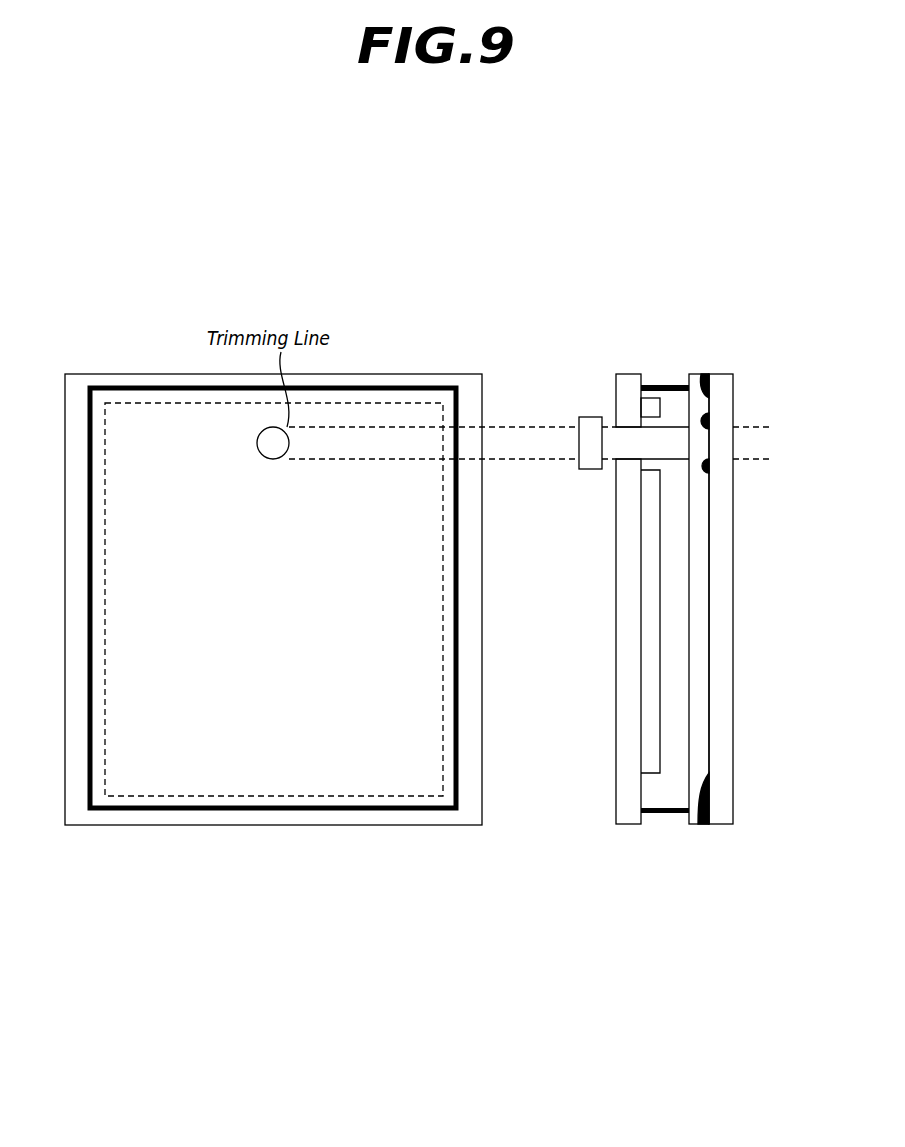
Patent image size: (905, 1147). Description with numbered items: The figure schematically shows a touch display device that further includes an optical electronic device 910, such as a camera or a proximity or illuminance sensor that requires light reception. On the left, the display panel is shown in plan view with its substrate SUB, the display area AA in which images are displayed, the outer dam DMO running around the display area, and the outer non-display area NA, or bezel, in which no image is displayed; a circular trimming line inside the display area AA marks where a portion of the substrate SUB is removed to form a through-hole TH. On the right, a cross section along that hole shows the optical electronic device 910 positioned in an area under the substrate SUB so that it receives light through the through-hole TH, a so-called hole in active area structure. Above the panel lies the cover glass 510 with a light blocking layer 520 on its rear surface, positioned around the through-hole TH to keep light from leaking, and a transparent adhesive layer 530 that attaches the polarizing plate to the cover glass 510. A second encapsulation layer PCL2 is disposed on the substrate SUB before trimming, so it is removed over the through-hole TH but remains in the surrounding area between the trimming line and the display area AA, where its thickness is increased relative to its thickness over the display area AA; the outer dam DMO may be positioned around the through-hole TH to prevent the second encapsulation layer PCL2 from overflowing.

The cover glass 510 is at (719, 372).
The light blocking layer 520 is at (713, 382).
The transparent adhesive layer 530 is at (708, 400).
The optical electronic device 910 is at (592, 472).
The substrate SUB is at (94, 372).
The display area AA is at (380, 403).
The outer dam DMO is at (423, 387).
The non-display area NA is at (471, 380).
The second encapsulation layer PCL2 is at (670, 387).
The through-hole TH is at (773, 397).